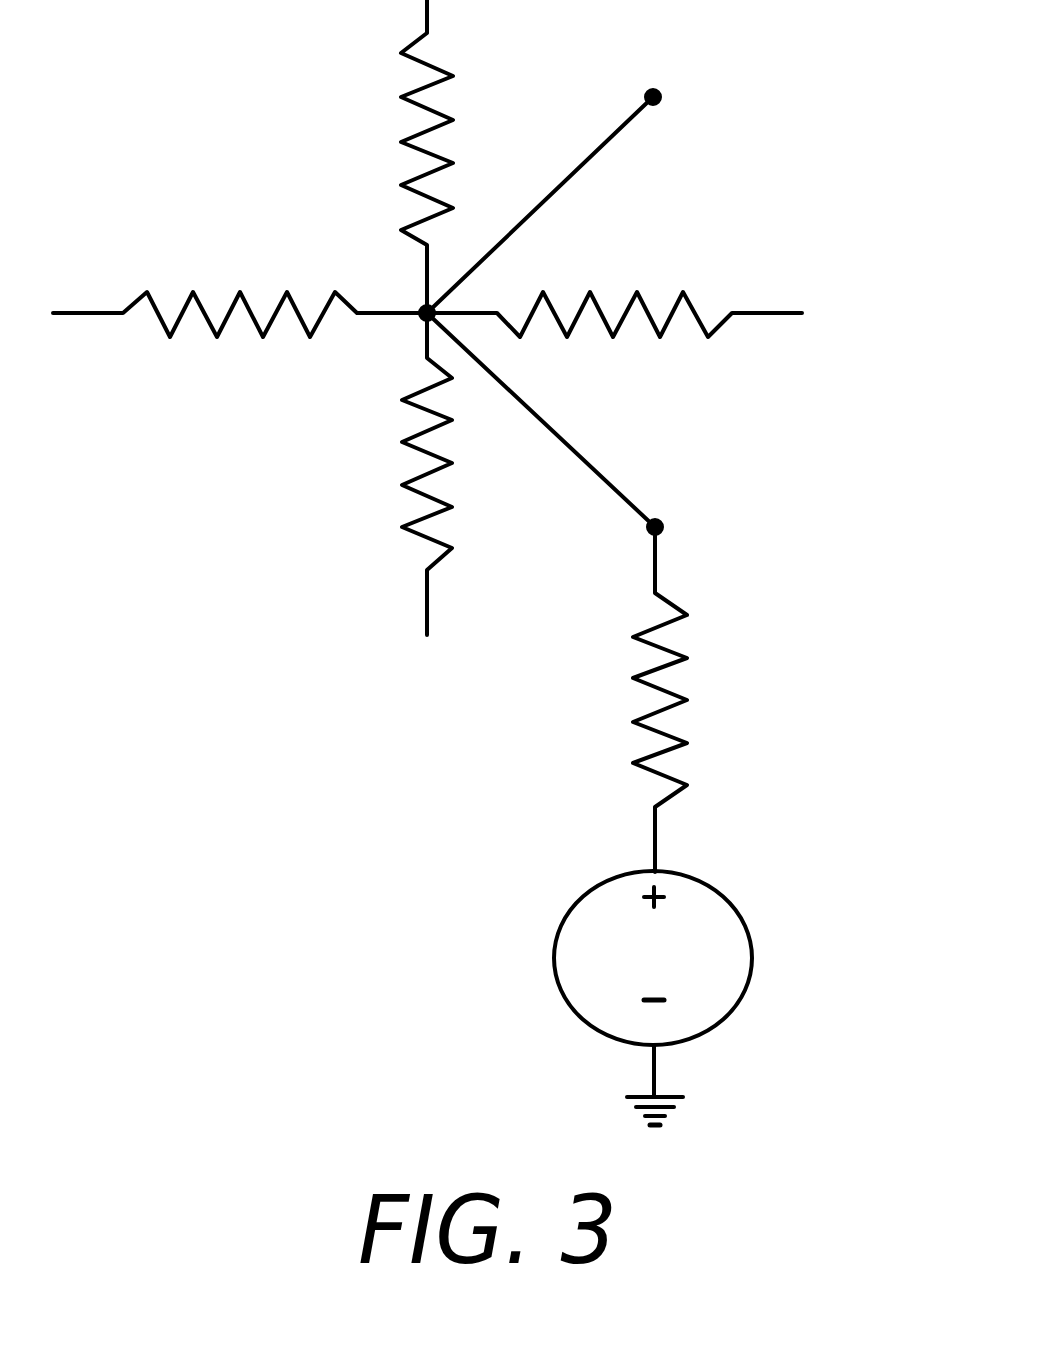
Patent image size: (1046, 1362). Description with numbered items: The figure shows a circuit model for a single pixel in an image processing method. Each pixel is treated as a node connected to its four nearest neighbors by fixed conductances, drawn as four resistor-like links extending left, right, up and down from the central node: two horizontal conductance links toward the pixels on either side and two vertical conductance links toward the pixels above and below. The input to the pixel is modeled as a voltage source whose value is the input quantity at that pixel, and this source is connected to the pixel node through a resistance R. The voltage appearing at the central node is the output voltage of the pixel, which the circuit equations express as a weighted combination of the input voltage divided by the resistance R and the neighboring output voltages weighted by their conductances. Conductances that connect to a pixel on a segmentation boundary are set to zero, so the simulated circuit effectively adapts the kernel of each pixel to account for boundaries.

The resistance R is at (702, 699).